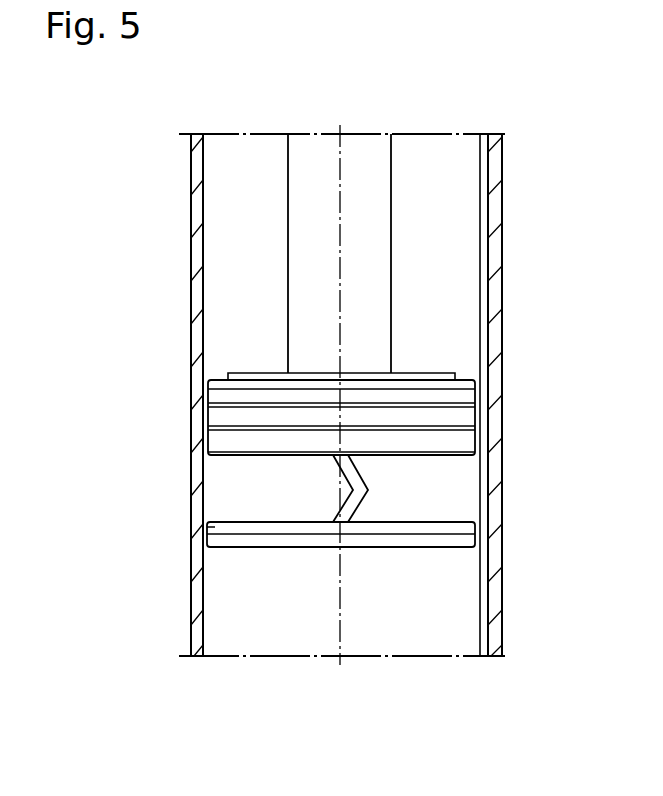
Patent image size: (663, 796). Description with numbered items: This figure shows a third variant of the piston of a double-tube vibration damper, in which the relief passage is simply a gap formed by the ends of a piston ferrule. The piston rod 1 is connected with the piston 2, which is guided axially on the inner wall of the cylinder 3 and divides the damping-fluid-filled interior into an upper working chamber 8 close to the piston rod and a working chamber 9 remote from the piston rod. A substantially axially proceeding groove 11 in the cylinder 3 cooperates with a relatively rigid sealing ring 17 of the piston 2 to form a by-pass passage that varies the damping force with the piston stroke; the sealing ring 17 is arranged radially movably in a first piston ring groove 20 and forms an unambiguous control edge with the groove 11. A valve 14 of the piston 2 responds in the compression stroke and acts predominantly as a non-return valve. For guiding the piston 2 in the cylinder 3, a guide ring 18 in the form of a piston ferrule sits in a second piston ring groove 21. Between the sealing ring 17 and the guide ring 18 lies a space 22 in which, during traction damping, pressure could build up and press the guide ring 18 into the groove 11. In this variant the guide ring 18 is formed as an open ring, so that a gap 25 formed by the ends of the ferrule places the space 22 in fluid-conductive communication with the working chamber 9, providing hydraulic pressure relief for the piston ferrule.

The piston rod 1 is at (387, 160).
The piston 2 is at (458, 400).
The cylinder 3 is at (493, 227).
The upper working chamber 8 is at (457, 267).
The working chamber remote from the piston rod 9 is at (460, 573).
The axially proceeding groove 11 is at (483, 303).
The valve 14 is at (243, 377).
The sealing ring 17 is at (463, 418).
The guide ring 18 is at (460, 487).
The first piston ring groove 20 is at (218, 402).
The second piston ring groove 21 is at (210, 530).
The space 22 is at (207, 433).
The gap 25 is at (350, 500).